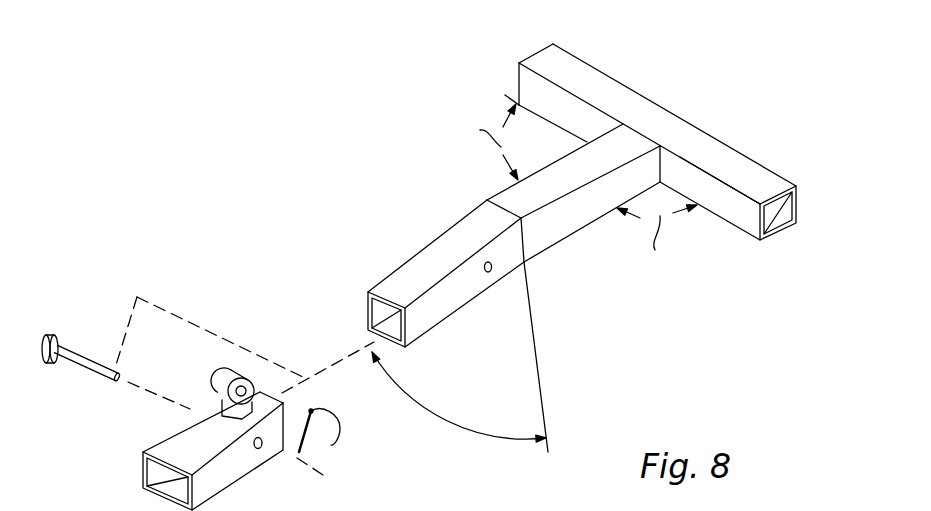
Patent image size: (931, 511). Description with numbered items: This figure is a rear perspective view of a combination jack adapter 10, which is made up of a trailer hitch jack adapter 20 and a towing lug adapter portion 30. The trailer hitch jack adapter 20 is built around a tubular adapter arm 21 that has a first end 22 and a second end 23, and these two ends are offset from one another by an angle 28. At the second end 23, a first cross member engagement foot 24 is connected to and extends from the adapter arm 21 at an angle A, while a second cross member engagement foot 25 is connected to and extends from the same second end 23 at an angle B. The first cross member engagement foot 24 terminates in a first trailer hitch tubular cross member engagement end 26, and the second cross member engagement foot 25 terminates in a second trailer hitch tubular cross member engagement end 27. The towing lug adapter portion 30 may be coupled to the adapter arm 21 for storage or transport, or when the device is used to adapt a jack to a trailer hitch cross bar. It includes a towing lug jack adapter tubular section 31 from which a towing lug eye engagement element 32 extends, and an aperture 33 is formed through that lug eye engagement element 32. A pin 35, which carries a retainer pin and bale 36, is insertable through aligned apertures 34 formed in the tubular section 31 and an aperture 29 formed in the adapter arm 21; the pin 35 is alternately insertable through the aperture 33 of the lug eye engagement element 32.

The combination jack adapter 10 is at (270, 50).
The trailer hitch jack adapter 20 is at (408, 156).
The tubular adapter arm 21 is at (414, 258).
The first end 22 is at (367, 292).
The second end 23 is at (635, 135).
The first cross member engagement foot 24 is at (597, 73).
The second cross member engagement foot 25 is at (736, 156).
The first trailer hitch tubular cross member engagement end 26 is at (535, 55).
The second trailer hitch tubular cross member engagement end 27 is at (800, 207).
The angle 28 is at (433, 420).
The aperture 29 is at (491, 270).
The towing lug adapter portion 30 is at (227, 299).
The towing lug jack adapter tubular section 31 is at (164, 442).
The towing lug eye engagement element 32 is at (222, 378).
The aperture 33 is at (248, 386).
The aligned apertures 34 is at (261, 446).
The pin 35 is at (70, 350).
The retainer pin and bale 36 is at (313, 409).